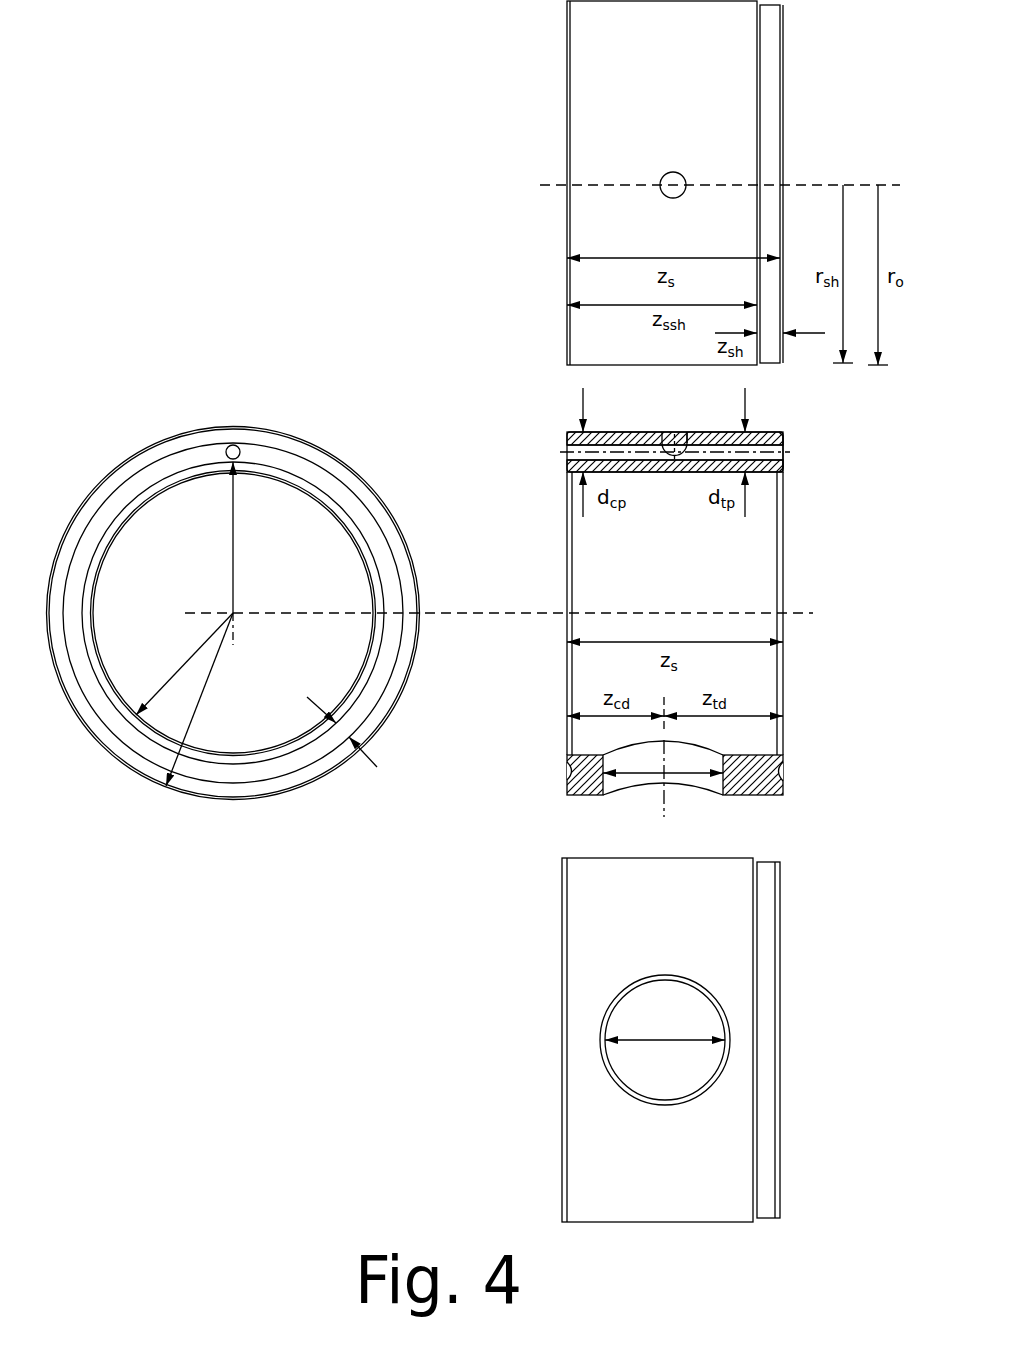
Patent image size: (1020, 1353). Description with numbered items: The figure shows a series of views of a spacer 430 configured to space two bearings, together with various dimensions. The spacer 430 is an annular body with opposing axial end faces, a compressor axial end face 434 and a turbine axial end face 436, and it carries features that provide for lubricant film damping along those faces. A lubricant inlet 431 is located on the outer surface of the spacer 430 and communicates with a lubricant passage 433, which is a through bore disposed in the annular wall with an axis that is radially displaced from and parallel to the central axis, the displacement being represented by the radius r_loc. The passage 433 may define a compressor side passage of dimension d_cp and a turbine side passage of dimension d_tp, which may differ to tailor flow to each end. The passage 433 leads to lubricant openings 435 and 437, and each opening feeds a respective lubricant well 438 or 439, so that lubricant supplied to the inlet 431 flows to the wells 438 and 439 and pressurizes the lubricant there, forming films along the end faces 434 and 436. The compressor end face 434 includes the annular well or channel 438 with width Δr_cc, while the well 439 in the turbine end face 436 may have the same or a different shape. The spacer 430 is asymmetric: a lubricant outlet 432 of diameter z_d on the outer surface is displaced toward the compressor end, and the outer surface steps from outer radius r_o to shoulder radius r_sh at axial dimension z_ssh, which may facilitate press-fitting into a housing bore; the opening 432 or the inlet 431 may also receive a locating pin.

The spacer 430 is at (150, 400).
The lubricant inlet 431 is at (673, 172).
The lubricant outlet 432 is at (715, 792).
The lubricant passage 433 is at (683, 438).
The compressor axial end face 434 is at (533, 89).
The lubricant opening 435 is at (565, 442).
The turbine axial end face 436 is at (815, 88).
The lubricant opening 437 is at (785, 441).
The lubricant well 438 is at (565, 770).
The lubricant well 439 is at (786, 770).